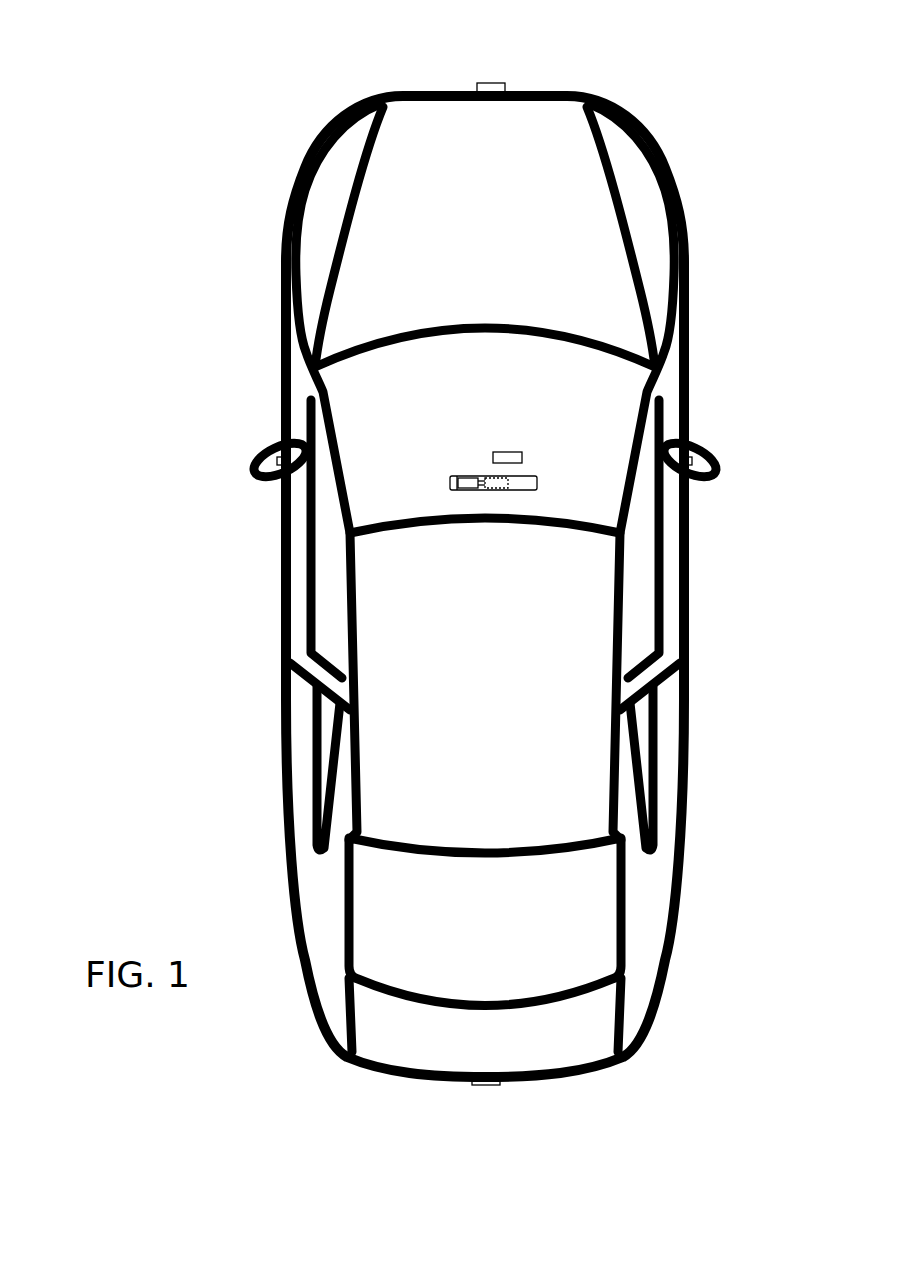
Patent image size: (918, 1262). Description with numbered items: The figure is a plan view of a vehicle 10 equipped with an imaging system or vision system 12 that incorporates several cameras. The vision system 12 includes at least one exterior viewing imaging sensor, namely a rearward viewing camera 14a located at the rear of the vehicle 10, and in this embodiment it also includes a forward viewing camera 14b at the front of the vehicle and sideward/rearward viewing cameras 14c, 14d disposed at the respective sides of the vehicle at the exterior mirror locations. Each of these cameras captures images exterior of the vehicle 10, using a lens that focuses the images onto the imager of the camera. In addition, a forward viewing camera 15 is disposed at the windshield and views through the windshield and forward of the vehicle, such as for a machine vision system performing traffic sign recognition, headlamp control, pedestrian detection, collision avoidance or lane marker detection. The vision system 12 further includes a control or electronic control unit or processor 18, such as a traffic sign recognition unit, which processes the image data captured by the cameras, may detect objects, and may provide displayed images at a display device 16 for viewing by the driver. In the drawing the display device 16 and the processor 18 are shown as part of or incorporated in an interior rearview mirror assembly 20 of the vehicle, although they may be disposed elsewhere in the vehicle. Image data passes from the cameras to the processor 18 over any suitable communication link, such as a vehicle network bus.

The vehicle 10 is at (230, 183).
The vision system 12 is at (428, 1112).
The rearward viewing camera 14a is at (488, 1083).
The forward viewing camera 14b is at (493, 83).
The sideward/rearward viewing camera 14c is at (278, 460).
The sideward/rearward viewing camera 14d is at (690, 462).
The forward viewing camera 15 is at (512, 452).
The display device 16 is at (467, 480).
The processor 18 is at (492, 477).
The interior rearview mirror assembly 20 is at (528, 459).